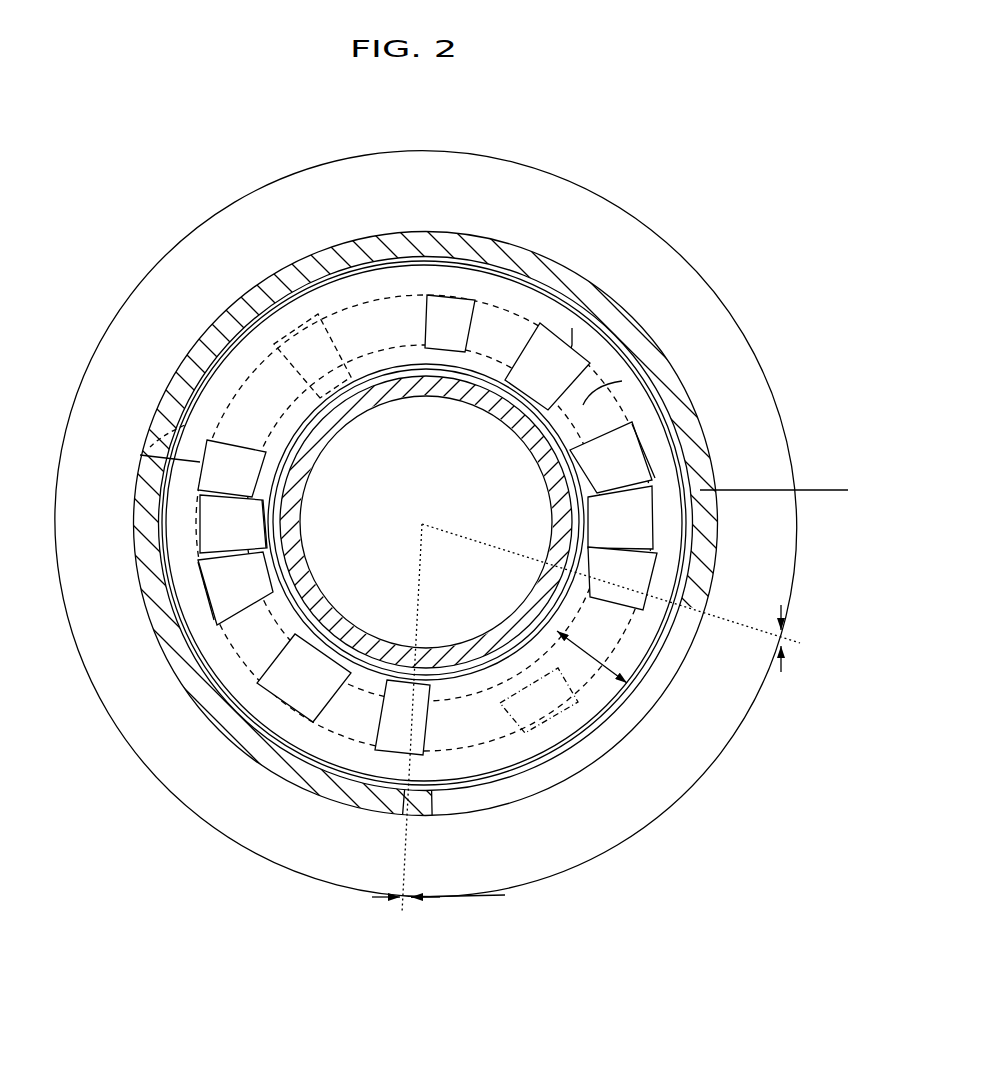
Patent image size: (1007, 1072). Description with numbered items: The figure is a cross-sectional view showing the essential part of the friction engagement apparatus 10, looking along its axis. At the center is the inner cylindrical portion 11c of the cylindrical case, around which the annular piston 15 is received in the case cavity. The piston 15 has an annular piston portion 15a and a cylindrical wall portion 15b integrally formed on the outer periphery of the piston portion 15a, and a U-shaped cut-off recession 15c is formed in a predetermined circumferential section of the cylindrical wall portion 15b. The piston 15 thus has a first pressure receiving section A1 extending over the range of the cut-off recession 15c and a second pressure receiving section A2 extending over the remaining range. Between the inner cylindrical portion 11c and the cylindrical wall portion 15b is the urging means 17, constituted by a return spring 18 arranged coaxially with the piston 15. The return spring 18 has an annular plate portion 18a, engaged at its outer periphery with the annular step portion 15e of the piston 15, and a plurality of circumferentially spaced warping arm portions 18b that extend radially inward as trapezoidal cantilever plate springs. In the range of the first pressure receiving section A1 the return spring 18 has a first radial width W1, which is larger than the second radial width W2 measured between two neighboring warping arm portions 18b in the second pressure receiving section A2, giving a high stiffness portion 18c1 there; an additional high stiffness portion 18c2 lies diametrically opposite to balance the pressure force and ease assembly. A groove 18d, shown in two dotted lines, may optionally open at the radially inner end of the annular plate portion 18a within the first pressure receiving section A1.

The friction engagement apparatus 10 is at (300, 208).
The inner cylindrical portion 11c is at (352, 418).
The annular piston 15 is at (287, 263).
The annular piston portion 15a is at (577, 343).
The cylindrical wall portion 15b is at (520, 246).
The cut-off recession 15c is at (407, 803).
The annular step portion 15e is at (140, 455).
The urging means 17 is at (587, 745).
The return spring 18 is at (607, 723).
The annular plate portion 18a is at (663, 442).
The warping arm portions 18b is at (583, 405).
The high stiffness portion 18c1 is at (448, 716).
The additional high stiffness portion 18c2 is at (396, 333).
The groove 18d is at (535, 775).
The first pressure receiving section A1 is at (657, 817).
The second pressure receiving section A2 is at (632, 208).
The first radial width W1 is at (592, 668).
The second radial width W2 is at (791, 576).